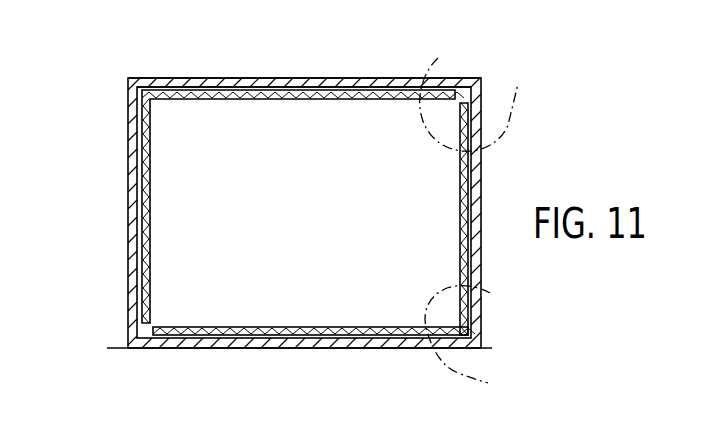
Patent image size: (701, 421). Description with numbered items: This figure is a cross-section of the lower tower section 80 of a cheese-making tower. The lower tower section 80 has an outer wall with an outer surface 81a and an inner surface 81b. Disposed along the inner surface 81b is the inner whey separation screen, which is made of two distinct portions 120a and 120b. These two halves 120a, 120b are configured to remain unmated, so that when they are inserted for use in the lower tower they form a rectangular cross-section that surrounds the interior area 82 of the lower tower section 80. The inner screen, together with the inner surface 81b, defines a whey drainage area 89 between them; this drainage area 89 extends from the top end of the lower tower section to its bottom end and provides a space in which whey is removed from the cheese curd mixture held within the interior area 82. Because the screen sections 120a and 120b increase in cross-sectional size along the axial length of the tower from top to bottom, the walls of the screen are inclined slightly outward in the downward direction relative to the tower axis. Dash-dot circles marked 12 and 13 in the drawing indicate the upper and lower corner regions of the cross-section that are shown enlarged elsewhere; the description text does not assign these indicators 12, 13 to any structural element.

The section indicator for FIG. 12 is at (438, 58).
The section indicator for FIG. 13 is at (490, 293).
The lower tower section 80 is at (271, 191).
The outer surface 81a is at (128, 243).
The inner surface 81b is at (140, 226).
The interior area 82 is at (321, 218).
The whey drainage area 89 is at (305, 88).
The screen portion 120a is at (150, 262).
The screen portion 120b is at (215, 330).